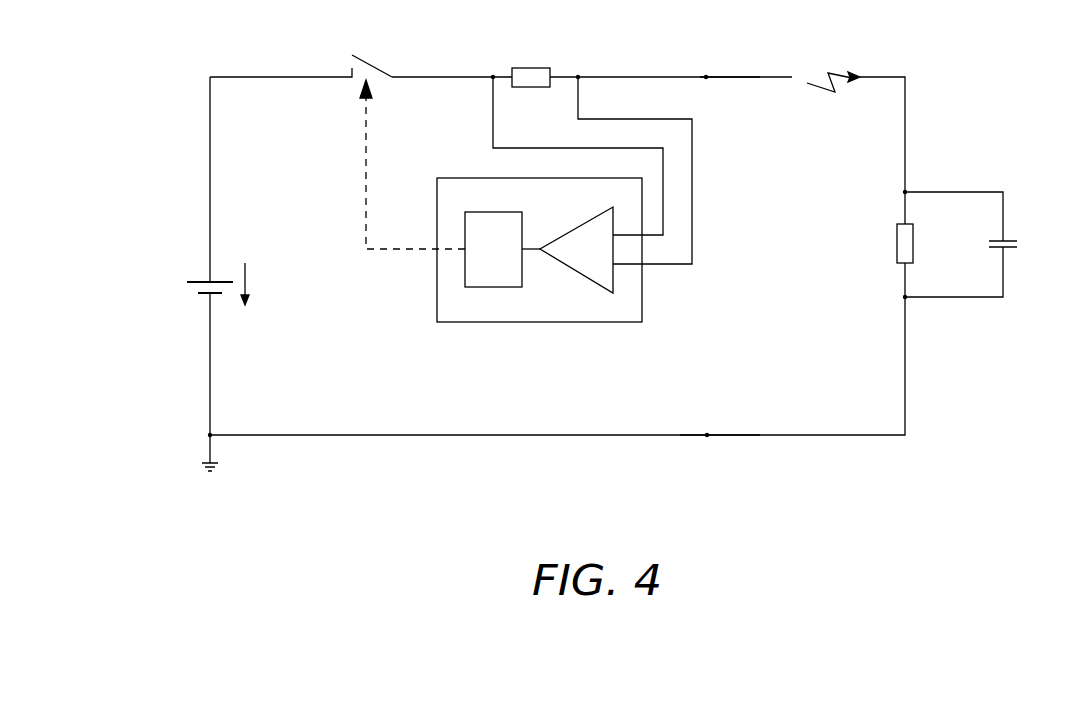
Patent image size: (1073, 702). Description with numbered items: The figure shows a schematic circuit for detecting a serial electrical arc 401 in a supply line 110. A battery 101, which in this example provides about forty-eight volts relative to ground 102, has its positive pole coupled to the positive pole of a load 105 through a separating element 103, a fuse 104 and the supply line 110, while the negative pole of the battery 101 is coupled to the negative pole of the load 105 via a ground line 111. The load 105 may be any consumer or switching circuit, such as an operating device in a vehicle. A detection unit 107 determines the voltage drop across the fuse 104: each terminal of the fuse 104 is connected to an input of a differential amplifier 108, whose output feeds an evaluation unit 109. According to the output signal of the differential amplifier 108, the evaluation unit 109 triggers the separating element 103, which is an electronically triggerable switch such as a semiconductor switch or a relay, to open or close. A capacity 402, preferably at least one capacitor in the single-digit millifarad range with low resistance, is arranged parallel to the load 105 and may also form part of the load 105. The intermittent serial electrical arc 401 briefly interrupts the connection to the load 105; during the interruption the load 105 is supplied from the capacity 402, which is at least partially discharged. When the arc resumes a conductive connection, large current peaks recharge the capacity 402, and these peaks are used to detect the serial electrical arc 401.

The battery 101 is at (214, 284).
The ground 102 is at (227, 476).
The separating element 103 is at (372, 49).
The fuse 104 is at (531, 63).
The load 105 is at (925, 243).
The detection unit 107 is at (463, 322).
The differential amplifier 108 is at (576, 250).
The evaluation unit 109 is at (450, 183).
The supply line 110 is at (730, 63).
The ground line 111 is at (720, 450).
The serial electrical arc 401 is at (833, 64).
The capacity 402 is at (979, 244).